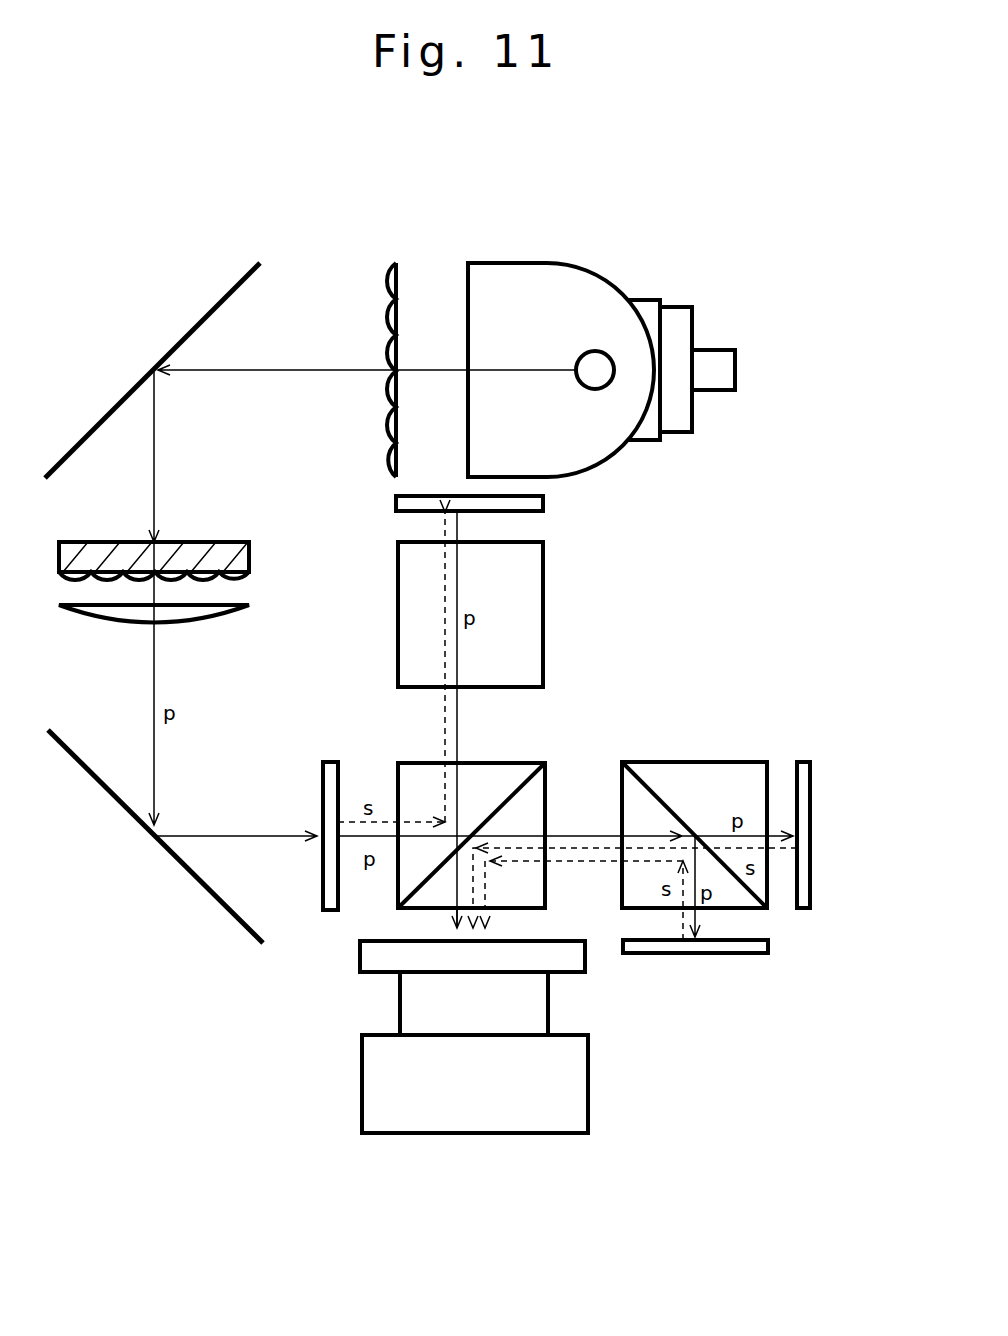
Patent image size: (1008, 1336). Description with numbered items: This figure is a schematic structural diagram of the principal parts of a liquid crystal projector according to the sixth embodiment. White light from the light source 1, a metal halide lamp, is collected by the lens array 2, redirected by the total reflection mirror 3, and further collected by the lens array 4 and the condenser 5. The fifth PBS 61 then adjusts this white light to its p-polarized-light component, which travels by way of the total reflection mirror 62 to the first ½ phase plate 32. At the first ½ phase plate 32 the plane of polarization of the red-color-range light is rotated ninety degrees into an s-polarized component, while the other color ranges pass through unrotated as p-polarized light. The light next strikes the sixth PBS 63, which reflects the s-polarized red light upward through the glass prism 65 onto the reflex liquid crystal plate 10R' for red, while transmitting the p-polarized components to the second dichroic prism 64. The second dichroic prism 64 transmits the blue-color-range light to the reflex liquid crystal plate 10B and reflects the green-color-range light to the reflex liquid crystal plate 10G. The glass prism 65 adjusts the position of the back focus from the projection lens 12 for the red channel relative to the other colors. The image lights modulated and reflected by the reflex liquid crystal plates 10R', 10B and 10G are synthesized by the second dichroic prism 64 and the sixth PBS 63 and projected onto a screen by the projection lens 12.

The light source 1 is at (578, 284).
The lens array 2 is at (388, 278).
The total reflection mirror 3 is at (238, 283).
The lens array 4 is at (250, 574).
The condenser 5 is at (205, 615).
The fifth PBS 61 is at (230, 545).
The total reflection mirror 62 is at (243, 928).
The first ½ phase plate 32 is at (330, 790).
The sixth PBS 63 is at (505, 770).
The second dichroic prism 64 is at (695, 770).
The glass prism 65 is at (535, 583).
The reflex liquid crystal plate for red color range 10R' is at (530, 507).
The reflex liquid crystal plate for blue color range 10B is at (805, 780).
The reflex liquid crystal plate for green color range 10G is at (750, 948).
The projection lens 12 is at (375, 1072).